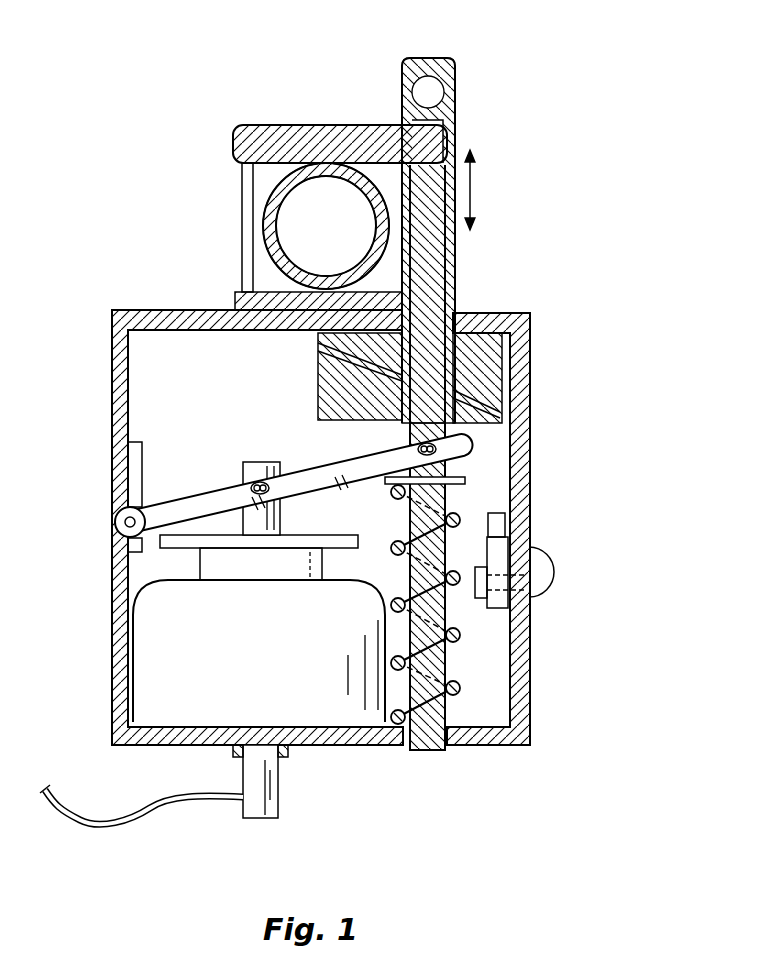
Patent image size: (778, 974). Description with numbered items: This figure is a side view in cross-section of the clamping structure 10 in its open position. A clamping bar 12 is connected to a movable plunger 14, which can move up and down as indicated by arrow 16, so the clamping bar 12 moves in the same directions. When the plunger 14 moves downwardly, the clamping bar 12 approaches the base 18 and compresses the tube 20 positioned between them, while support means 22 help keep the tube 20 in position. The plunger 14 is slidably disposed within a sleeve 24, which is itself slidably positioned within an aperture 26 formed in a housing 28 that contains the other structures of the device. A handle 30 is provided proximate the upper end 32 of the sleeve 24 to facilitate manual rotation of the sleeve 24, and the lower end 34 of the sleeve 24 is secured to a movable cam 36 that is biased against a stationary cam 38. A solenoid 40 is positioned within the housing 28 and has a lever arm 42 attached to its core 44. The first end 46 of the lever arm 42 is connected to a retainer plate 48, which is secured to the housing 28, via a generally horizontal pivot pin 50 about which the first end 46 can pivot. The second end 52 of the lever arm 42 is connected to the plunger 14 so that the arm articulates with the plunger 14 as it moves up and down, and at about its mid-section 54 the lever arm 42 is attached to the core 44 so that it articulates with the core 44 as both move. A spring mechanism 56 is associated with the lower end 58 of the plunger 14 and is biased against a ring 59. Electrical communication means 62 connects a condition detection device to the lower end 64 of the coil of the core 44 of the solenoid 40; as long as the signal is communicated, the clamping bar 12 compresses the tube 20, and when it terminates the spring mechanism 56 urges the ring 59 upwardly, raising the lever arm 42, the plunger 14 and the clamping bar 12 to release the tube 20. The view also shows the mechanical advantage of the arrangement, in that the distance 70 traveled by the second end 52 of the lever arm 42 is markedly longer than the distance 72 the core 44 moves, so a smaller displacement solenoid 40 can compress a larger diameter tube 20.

The clamping structure 10 is at (190, 175).
The clamping bar 12 is at (300, 140).
The plunger 14 is at (473, 376).
The arrow 16 is at (483, 190).
The base 18 is at (258, 300).
The tube 20 is at (335, 165).
The support means 22 is at (245, 212).
The sleeve 24 is at (432, 62).
The aperture 26 is at (462, 316).
The housing 28 is at (299, 507).
The handle 30 is at (436, 92).
The upper end of the sleeve 32 is at (437, 80).
The lower end of the sleeve 34 is at (458, 432).
The movable cam 36 is at (461, 391).
The stationary cam 38 is at (487, 365).
The solenoid 40 is at (160, 652).
The lever arm 42 is at (314, 472).
The core 44 is at (262, 465).
The first end of the lever arm 46 is at (148, 505).
The retainer plate 48 is at (135, 460).
The pivot pin 50 is at (120, 524).
The second end of the lever arm 52 is at (470, 450).
The mid-section of the lever arm 54 is at (254, 488).
The spring mechanism 56 is at (465, 604).
The lower end of the plunger 58 is at (448, 752).
The ring 59 is at (463, 482).
The electrical communication means 62 is at (152, 816).
The lower end of the coil 64 is at (290, 793).
The distance traveled by the second end of the lever arm 70 is at (378, 485).
The distance the core moves 72 is at (330, 505).